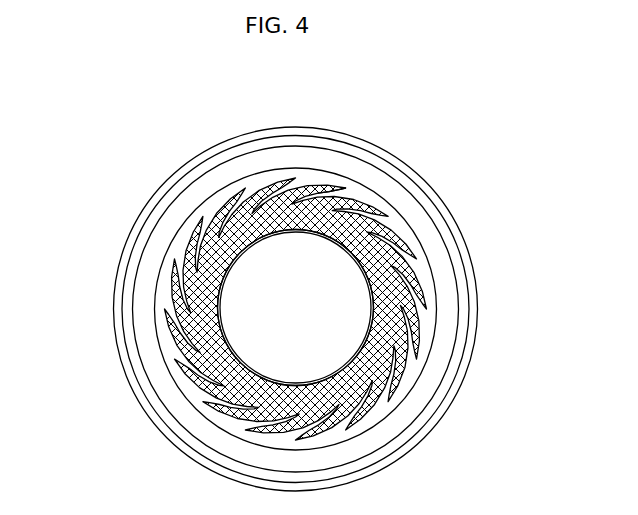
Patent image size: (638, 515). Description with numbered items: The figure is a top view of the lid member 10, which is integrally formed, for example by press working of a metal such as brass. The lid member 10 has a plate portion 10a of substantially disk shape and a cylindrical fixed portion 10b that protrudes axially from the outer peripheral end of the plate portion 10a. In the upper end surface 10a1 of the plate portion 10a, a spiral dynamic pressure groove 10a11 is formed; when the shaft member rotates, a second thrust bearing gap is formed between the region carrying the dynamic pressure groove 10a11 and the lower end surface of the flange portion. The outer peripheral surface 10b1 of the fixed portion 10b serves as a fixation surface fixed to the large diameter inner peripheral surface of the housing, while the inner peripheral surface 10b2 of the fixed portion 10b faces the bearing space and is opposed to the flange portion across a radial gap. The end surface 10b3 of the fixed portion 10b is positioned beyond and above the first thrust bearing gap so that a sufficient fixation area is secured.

The lid member 10 is at (291, 285).
The plate portion 10a is at (311, 264).
The upper end surface 10a1 is at (297, 259).
The dynamic pressure groove 10a11 is at (313, 180).
The fixed portion 10b is at (261, 292).
The outer peripheral surface 10b1 is at (124, 247).
The inner peripheral surface 10b2 is at (232, 146).
The end surface 10b3 is at (150, 209).